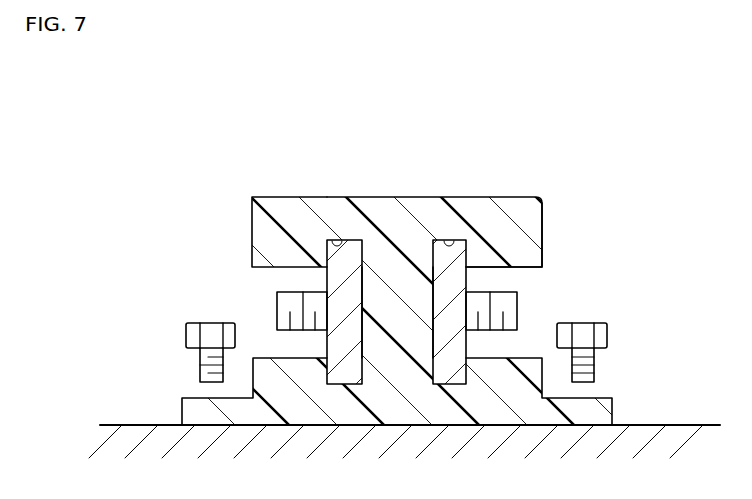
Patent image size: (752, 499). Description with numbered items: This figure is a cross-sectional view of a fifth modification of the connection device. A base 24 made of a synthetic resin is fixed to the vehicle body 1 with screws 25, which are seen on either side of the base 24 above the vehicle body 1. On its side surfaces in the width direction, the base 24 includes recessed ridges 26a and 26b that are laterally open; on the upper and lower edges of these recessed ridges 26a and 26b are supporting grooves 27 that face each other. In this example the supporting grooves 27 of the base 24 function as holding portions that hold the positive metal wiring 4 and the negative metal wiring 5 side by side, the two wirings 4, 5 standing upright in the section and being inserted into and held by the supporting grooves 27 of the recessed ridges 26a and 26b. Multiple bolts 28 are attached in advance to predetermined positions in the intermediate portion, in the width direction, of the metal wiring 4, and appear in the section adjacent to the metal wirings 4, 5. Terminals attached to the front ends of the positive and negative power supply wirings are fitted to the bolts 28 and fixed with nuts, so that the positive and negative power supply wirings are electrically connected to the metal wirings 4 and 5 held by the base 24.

The vehicle body 1 is at (655, 424).
The positive metal wiring 4 is at (442, 263).
The negative metal wiring 5 is at (357, 250).
The base 24 is at (605, 398).
The screws 25 is at (190, 323).
The recessed ridge 26a is at (542, 268).
The recessed ridge 26b is at (254, 268).
The supporting grooves 27 is at (333, 251).
The bolts 28 is at (277, 300).